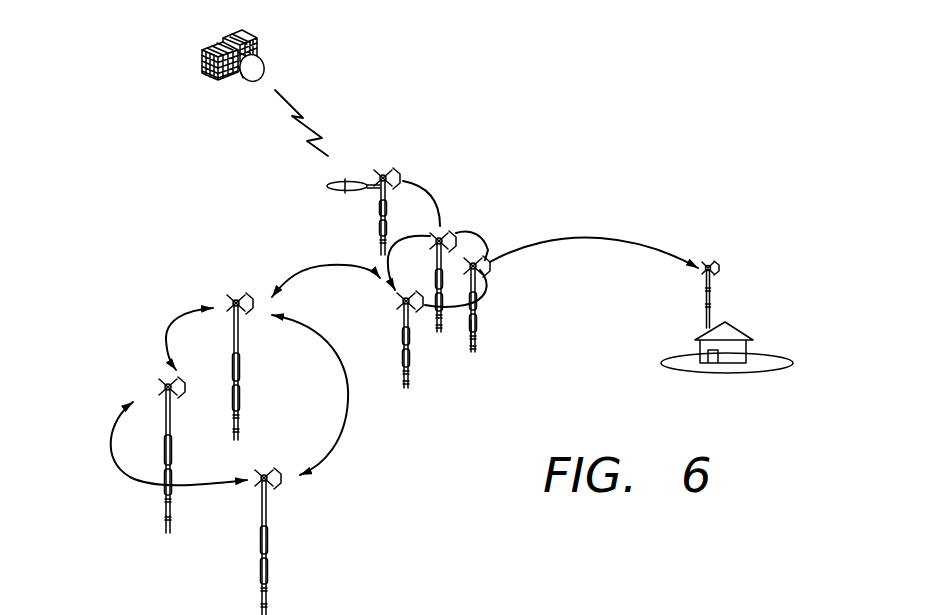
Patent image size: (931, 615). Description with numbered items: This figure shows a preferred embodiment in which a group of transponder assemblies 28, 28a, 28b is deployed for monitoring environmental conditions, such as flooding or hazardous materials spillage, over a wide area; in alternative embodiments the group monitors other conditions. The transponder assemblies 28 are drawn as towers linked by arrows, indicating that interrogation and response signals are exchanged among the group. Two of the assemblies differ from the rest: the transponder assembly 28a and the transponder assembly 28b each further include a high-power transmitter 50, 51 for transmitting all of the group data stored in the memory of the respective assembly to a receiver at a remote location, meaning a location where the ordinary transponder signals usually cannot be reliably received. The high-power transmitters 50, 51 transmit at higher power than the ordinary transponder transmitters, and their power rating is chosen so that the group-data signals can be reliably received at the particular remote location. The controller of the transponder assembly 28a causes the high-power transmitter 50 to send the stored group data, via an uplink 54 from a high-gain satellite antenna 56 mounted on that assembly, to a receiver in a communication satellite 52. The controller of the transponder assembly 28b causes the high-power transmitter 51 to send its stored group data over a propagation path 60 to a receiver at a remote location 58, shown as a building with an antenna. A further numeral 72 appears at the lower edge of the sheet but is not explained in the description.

The transponder assembly 28 is at (457, 214).
The transponder assembly 28a is at (396, 157).
The transponder assembly 28b is at (490, 269).
The high-power transmitter 50 is at (379, 208).
The high-power transmitter 51 is at (475, 330).
The communication satellite 52 is at (204, 68).
The uplink 54 is at (307, 140).
The high-gain satellite antenna 56 is at (328, 186).
The remote location 58 is at (730, 298).
The propagation path 60 is at (598, 243).
The node 72 is at (353, 607).